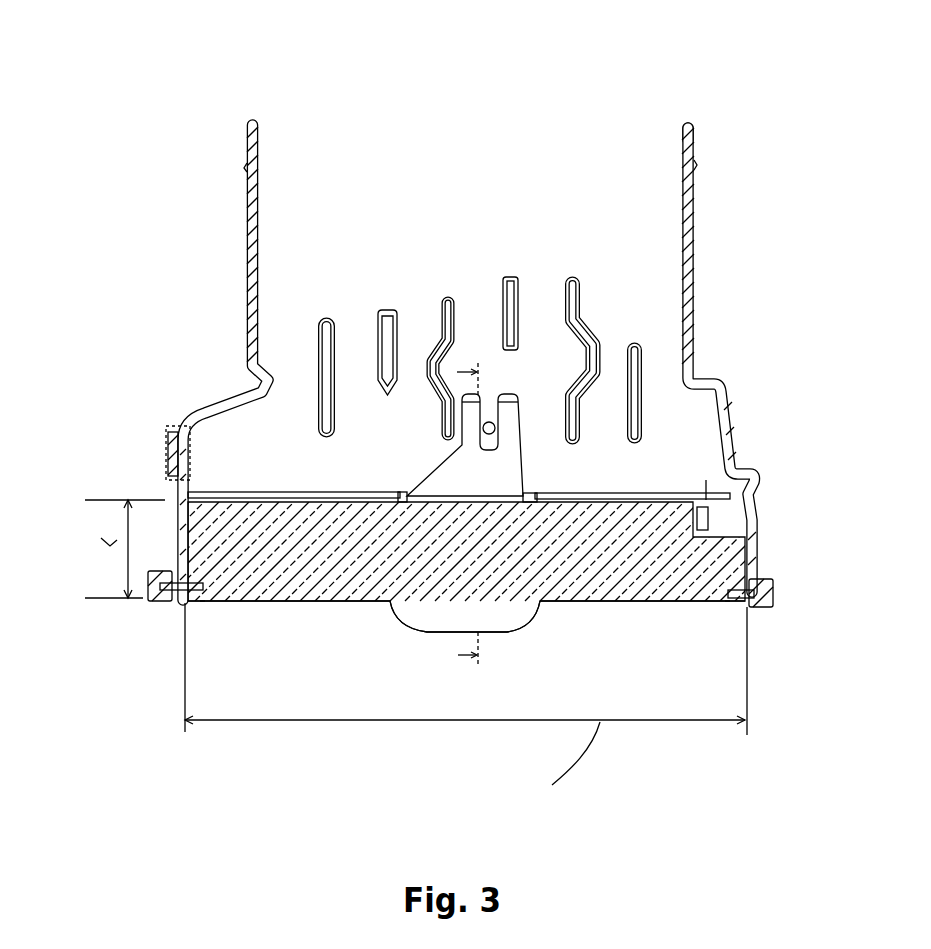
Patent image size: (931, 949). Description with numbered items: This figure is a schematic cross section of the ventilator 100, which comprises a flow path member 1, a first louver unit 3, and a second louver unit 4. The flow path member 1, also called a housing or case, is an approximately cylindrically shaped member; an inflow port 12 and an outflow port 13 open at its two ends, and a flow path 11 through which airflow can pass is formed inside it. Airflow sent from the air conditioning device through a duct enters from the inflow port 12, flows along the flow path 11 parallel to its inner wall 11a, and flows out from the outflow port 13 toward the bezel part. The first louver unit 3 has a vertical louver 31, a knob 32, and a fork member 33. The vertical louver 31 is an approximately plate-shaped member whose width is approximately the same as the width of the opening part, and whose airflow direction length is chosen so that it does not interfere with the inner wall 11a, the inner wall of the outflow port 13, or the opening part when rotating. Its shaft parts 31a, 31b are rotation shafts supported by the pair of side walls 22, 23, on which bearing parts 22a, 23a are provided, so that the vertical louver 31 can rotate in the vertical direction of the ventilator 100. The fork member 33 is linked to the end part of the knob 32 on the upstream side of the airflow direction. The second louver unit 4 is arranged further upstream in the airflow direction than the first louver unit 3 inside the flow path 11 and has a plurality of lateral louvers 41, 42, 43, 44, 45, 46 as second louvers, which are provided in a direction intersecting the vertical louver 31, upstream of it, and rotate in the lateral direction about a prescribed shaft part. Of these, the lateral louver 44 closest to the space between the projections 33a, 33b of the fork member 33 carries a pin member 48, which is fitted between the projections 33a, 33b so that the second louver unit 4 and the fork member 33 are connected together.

The ventilator 100 is at (190, 74).
The flow path member 1 is at (698, 378).
The flow path 11 is at (632, 226).
The inner wall of the flow path 11a is at (684, 150).
The inflow port 12 is at (292, 122).
The outflow port 13 is at (168, 413).
The first louver unit 3 is at (290, 487).
The vertical louver 31 is at (350, 602).
The shaft part of the vertical louver 31a is at (738, 600).
The shaft part of the vertical louver 31b is at (195, 602).
The knob 32 is at (402, 620).
The fork member 33 is at (503, 466).
The projection of the fork member 33a is at (510, 414).
The projection of the fork member 33b is at (468, 408).
The pin member 48 is at (489, 421).
The second louver unit 4 is at (332, 225).
The lateral louver 41 is at (320, 316).
The lateral louver 42 is at (382, 310).
The lateral louver 43 is at (446, 296).
The lateral louver 44 is at (508, 277).
The lateral louver 45 is at (572, 278).
The lateral louver 46 is at (634, 342).
The side wall 22 is at (764, 608).
The bearing part 22a is at (760, 590).
The side wall 23 is at (165, 602).
The bearing part 23a is at (160, 592).